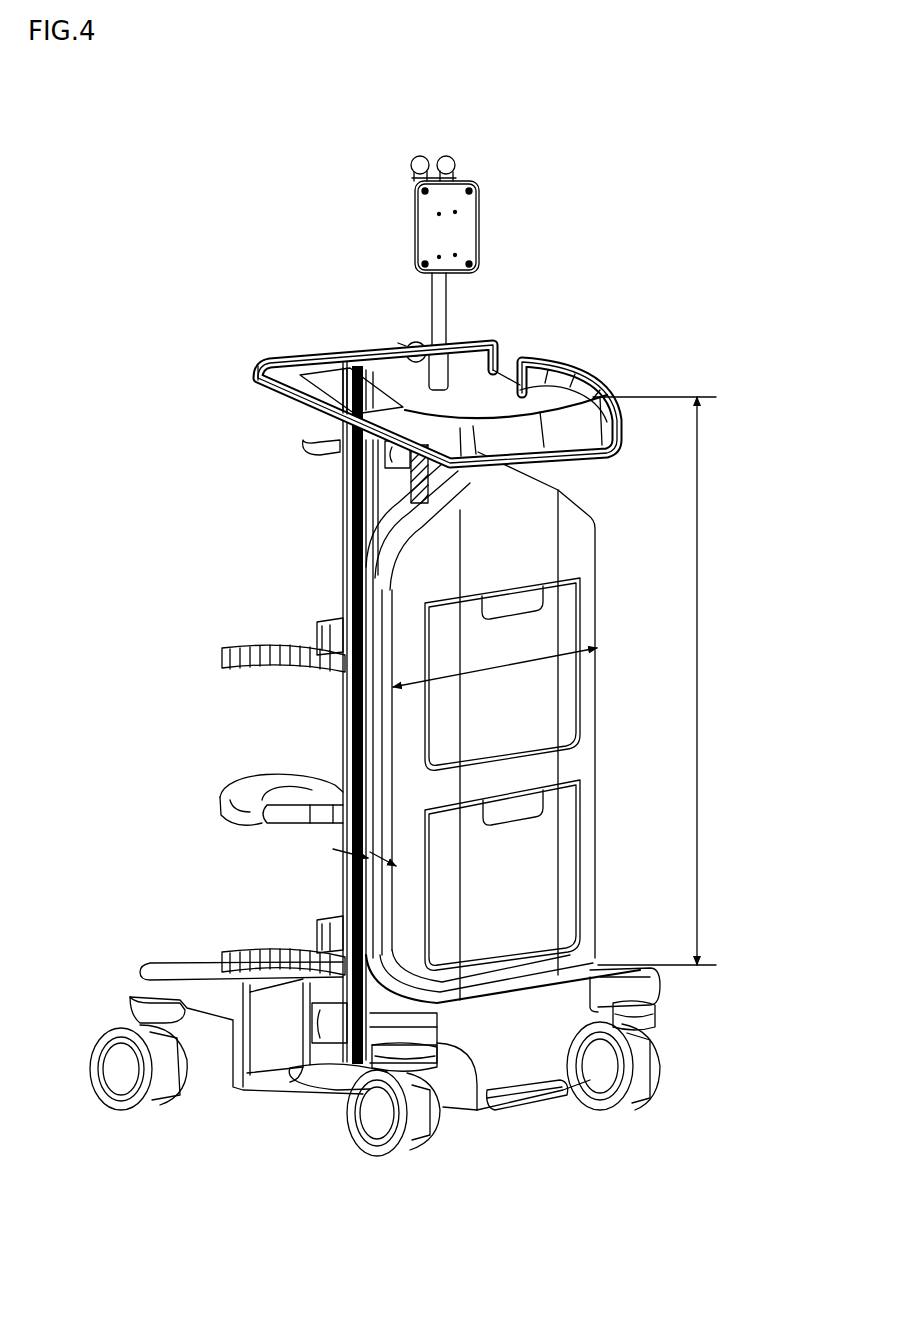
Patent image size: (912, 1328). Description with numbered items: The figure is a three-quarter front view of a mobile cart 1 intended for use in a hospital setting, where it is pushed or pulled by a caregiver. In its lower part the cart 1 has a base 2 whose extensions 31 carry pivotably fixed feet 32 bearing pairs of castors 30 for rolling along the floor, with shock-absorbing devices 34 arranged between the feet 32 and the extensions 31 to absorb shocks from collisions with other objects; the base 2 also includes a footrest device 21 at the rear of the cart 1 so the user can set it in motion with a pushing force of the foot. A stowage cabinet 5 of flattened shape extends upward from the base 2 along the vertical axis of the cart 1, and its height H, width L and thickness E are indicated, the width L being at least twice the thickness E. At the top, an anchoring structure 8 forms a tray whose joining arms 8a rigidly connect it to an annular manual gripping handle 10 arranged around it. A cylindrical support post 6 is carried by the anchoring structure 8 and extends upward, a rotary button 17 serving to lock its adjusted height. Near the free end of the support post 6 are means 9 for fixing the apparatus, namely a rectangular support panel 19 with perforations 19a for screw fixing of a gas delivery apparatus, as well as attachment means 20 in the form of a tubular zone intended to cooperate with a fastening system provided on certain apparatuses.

The mobile cart 1 is at (175, 527).
The base 2 is at (240, 1087).
The stowage cabinet 5 is at (400, 742).
The support post 6 is at (449, 306).
The anchoring structure 8 is at (437, 383).
The joining arms 8a is at (548, 387).
The means for fixing the apparatus 9 is at (426, 185).
The manual gripping handle 10 is at (256, 375).
The rotary button 17 is at (412, 340).
The support panel 19 is at (470, 232).
The perforations 19a is at (461, 191).
The attachment means 20 is at (441, 153).
The footrest device 21 is at (547, 1107).
The castors 30 is at (360, 1137).
The extensions 31 is at (413, 1030).
The feet 32 is at (408, 1140).
The shock-absorbing devices 34 is at (130, 1007).
The height H is at (656, 681).
The width L is at (495, 676).
The thickness E is at (353, 853).